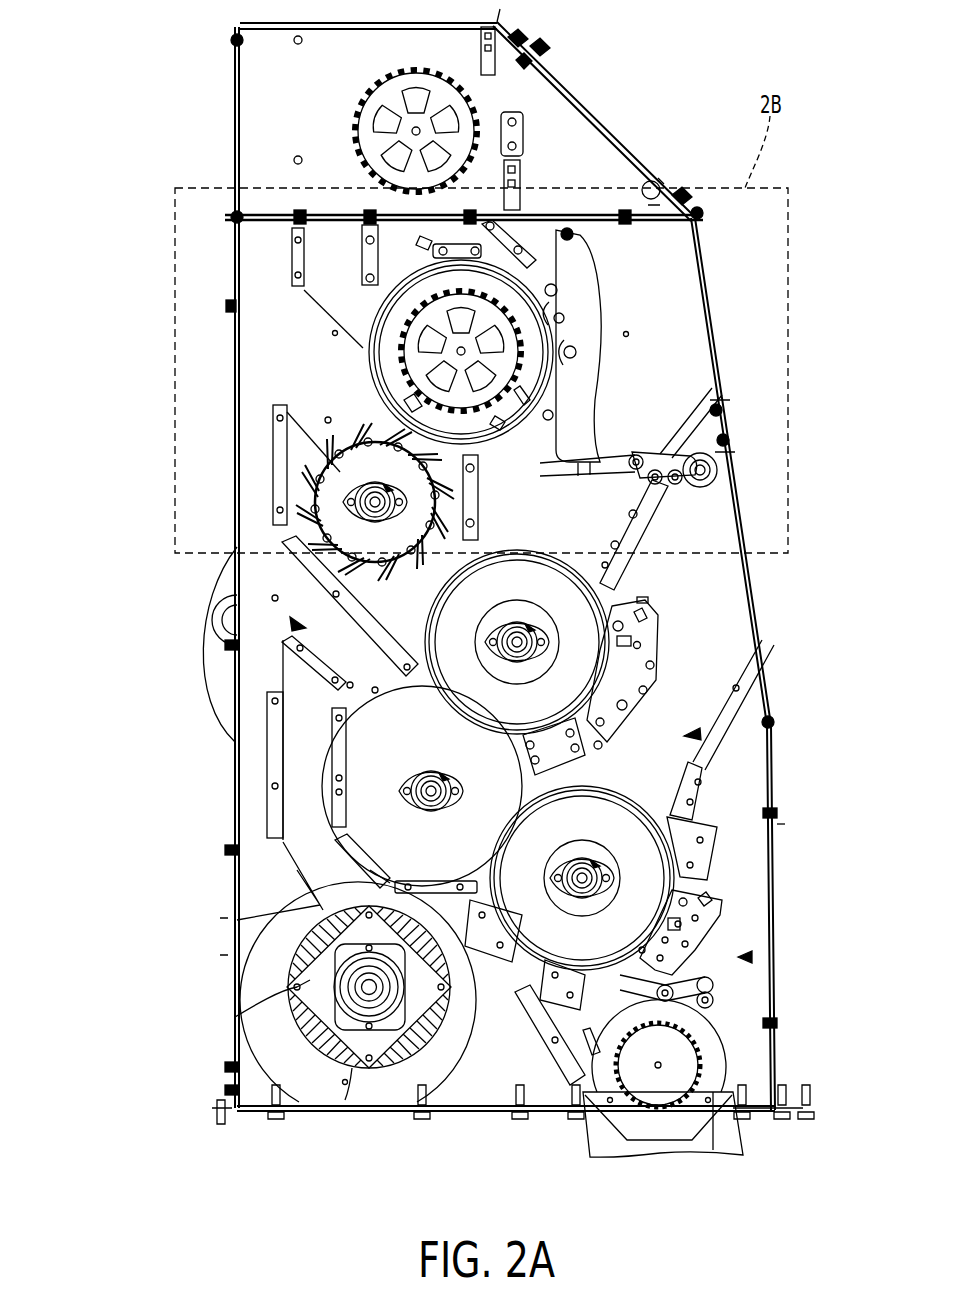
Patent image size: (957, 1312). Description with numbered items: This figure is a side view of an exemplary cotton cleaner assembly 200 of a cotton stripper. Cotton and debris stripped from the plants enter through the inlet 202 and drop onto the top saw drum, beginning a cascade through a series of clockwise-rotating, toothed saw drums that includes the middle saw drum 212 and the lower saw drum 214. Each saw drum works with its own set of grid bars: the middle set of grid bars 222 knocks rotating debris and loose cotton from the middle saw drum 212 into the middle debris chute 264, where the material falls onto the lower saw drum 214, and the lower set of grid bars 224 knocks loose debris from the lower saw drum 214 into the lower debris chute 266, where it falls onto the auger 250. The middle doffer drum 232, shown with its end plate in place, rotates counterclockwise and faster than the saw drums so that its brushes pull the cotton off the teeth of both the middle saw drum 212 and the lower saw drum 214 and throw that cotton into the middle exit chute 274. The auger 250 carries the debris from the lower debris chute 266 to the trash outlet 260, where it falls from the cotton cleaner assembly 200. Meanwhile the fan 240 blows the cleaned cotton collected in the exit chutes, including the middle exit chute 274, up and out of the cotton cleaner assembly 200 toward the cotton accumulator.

The cotton cleaner assembly 200 is at (140, 127).
The inlet 202 is at (582, 107).
The middle saw drum 212 is at (592, 628).
The lower saw drum 214 is at (640, 833).
The middle set of grid bars 222 is at (647, 653).
The lower set of grid bars 224 is at (707, 913).
The middle doffer drum 232 is at (355, 800).
The fan 240 is at (300, 985).
The auger 250 is at (710, 1037).
The trash outlet 260 is at (720, 1148).
The middle debris chute 264 is at (699, 734).
The lower debris chute 266 is at (752, 957).
The middle exit chute 274 is at (292, 624).